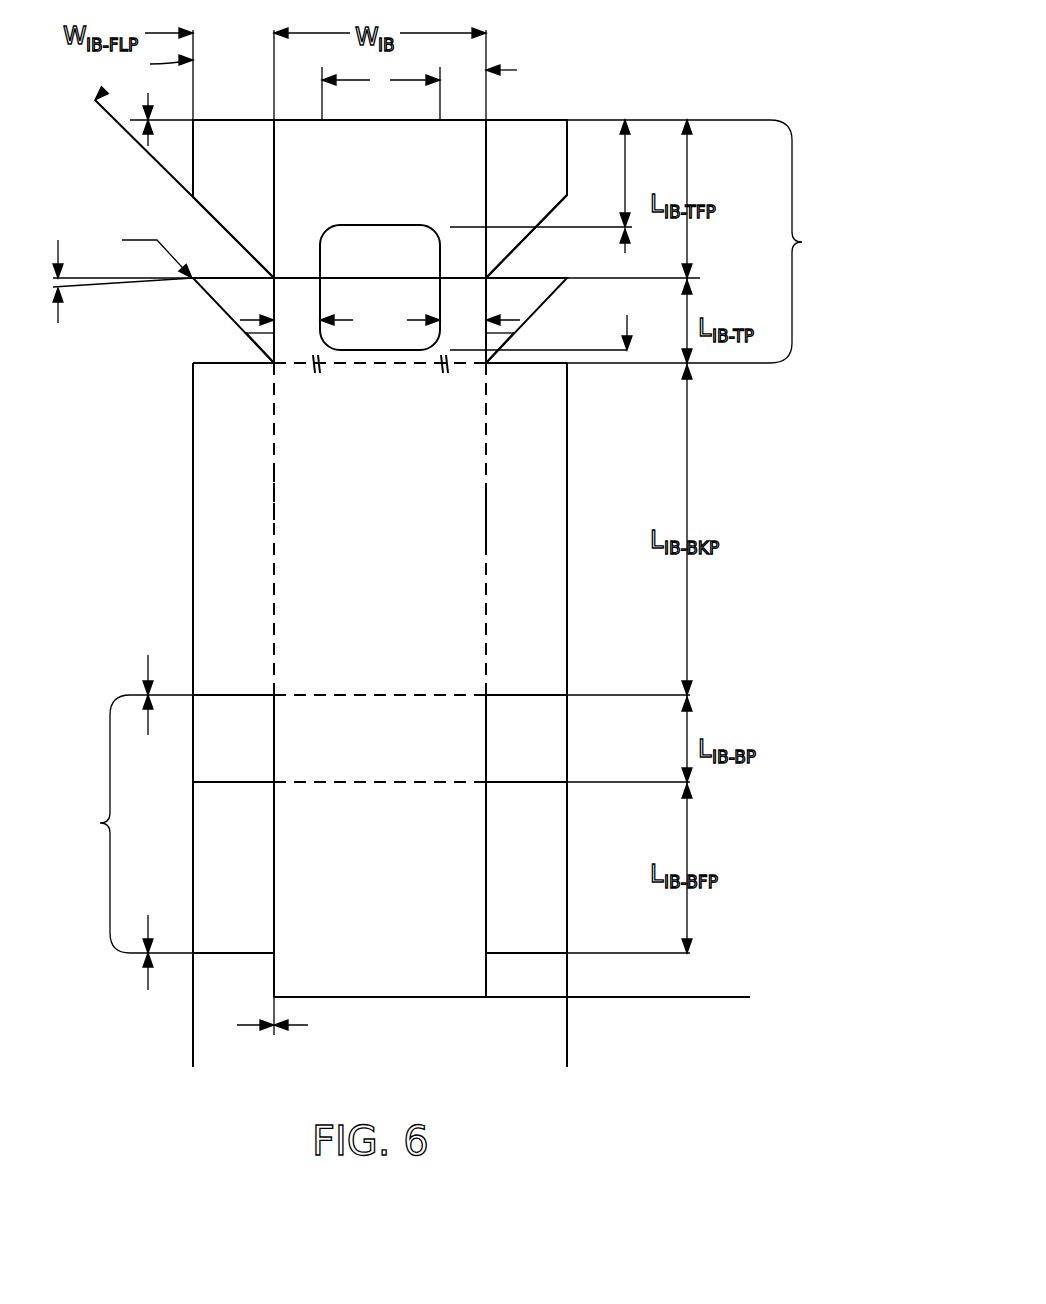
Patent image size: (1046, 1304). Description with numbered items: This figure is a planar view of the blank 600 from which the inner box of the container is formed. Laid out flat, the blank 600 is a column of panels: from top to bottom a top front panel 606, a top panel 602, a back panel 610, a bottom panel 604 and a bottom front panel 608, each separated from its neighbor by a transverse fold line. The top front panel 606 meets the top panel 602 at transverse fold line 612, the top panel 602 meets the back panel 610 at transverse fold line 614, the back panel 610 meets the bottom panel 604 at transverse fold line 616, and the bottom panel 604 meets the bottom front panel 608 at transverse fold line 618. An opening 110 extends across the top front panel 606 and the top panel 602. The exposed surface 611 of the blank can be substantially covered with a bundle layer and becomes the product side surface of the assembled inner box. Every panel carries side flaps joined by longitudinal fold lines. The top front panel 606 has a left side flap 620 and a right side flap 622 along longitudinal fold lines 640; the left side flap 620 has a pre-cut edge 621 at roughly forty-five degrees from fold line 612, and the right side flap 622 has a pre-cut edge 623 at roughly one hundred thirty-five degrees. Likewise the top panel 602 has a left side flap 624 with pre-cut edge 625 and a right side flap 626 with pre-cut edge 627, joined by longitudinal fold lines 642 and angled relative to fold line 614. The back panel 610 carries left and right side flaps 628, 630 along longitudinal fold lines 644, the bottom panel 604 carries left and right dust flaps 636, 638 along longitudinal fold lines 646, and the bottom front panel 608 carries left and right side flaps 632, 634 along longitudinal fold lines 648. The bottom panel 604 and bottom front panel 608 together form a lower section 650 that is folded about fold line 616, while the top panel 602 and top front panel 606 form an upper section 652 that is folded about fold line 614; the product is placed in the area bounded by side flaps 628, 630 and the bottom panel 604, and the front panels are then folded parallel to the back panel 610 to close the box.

The blank 600 is at (738, 42).
The opening 110 is at (472, 215).
The top panel 602 is at (296, 365).
The bottom panel 604 is at (400, 761).
The top front panel 606 is at (406, 176).
The bottom front panel 608 is at (400, 893).
The back panel 610 is at (400, 589).
The surface 611 is at (180, 578).
The transverse fold line 612 is at (303, 278).
The transverse fold line 614 is at (405, 365).
The transverse fold line 616 is at (353, 695).
The transverse fold line 618 is at (350, 782).
The left side flap 620 is at (250, 190).
The pre-cut edge 621 is at (207, 213).
The right side flap 622 is at (550, 190).
The pre-cut edge 623 is at (518, 244).
The left side flap 624 is at (233, 320).
The pre-cut edge 625 is at (220, 313).
The right side flap 626 is at (526, 320).
The pre-cut edge 627 is at (528, 318).
The left side flap 628 is at (251, 552).
The right side flap 630 is at (550, 552).
The left side flap 632 is at (251, 872).
The right side flap 634 is at (550, 872).
The left dust flap 636 is at (251, 756).
The right dust flap 638 is at (550, 756).
The longitudinal fold lines 640 is at (274, 148).
The longitudinal fold lines 642 is at (246, 333).
The longitudinal fold lines 644 is at (274, 495).
The longitudinal fold lines 646 is at (274, 705).
The longitudinal fold lines 648 is at (274, 940).
The lower section 650 is at (91, 824).
The upper section 652 is at (812, 241).